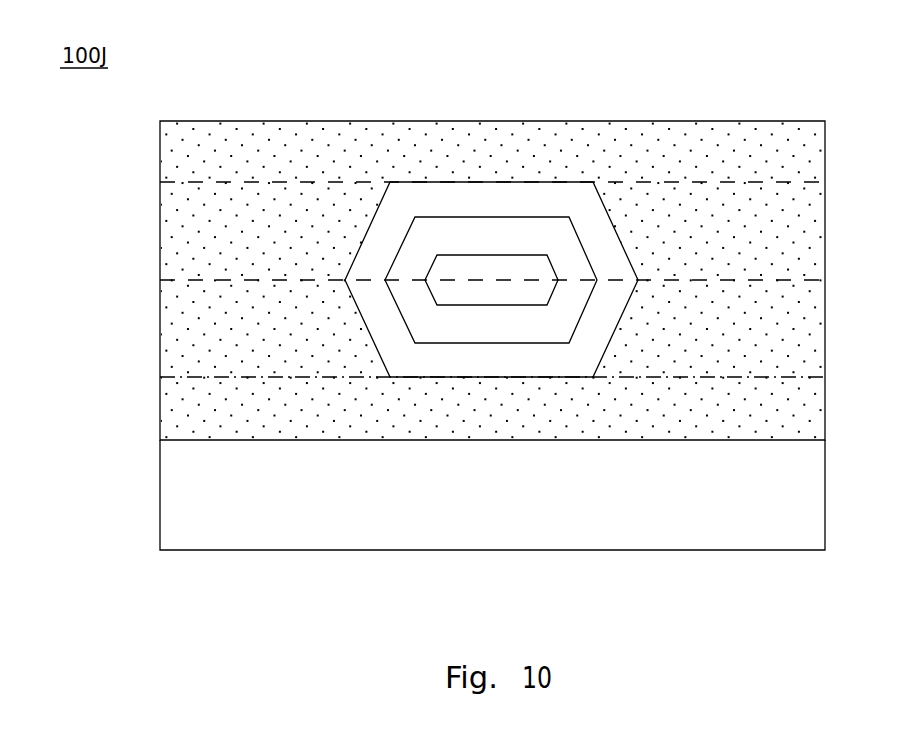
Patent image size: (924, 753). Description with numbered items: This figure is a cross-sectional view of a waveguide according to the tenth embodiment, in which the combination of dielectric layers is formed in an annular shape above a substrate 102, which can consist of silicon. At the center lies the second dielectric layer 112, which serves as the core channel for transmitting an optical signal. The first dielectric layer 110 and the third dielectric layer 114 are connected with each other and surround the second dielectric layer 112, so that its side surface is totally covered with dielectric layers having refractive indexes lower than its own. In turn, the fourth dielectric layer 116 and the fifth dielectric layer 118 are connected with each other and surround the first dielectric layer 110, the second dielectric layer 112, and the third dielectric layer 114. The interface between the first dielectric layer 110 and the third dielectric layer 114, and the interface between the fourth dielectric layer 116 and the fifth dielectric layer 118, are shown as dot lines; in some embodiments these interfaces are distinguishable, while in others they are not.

The substrate 102 is at (817, 495).
The first dielectric layer 110 is at (497, 321).
The second dielectric layer 112 is at (510, 273).
The third dielectric layer 114 is at (466, 233).
The fourth dielectric layer 116 is at (406, 197).
The fifth dielectric layer 118 is at (383, 320).